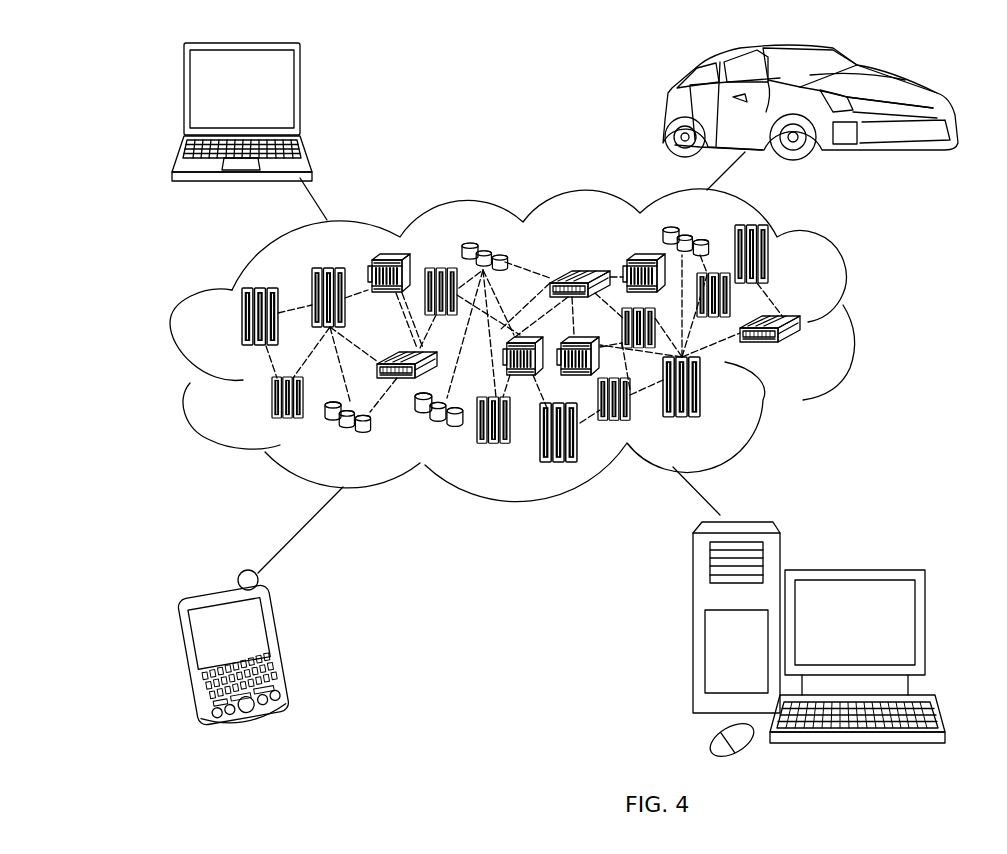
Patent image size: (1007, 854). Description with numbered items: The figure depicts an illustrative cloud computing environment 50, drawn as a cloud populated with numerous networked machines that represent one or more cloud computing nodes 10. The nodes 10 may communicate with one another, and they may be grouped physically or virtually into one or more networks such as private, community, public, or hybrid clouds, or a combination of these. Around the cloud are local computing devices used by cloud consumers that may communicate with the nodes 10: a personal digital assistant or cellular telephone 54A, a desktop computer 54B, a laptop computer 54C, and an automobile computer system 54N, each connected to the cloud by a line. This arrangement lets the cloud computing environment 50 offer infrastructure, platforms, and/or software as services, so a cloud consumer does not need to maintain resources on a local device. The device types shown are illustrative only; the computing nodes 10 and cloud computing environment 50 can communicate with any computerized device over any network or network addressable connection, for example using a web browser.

The cloud computing node 10 is at (810, 354).
The cloud computing environment 50 is at (534, 345).
The personal digital assistant or cellular telephone 54A is at (292, 648).
The desktop computer 54B is at (853, 570).
The laptop computer 54C is at (301, 94).
The automobile computer system 54N is at (672, 108).